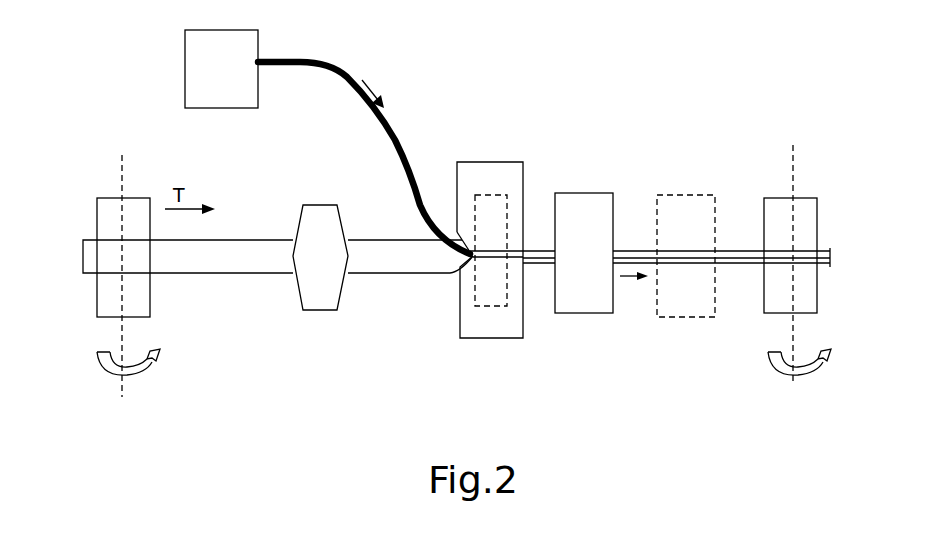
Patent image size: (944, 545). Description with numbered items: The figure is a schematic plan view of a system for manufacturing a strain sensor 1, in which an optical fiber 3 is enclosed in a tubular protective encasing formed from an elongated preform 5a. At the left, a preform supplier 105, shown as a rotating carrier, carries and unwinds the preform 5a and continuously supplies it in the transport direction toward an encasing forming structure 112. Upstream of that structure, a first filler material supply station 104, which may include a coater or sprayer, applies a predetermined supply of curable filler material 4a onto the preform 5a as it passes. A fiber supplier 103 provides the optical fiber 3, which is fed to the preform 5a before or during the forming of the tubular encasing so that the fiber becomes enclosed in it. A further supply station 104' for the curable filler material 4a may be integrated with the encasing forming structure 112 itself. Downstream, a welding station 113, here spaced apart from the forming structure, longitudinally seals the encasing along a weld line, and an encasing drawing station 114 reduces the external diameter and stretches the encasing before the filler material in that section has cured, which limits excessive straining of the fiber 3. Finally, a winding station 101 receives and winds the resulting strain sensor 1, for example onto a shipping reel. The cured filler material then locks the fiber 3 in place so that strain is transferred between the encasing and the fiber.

The strain sensor 1 is at (745, 267).
The optical fiber 3 is at (364, 145).
The curable filler material 4a is at (402, 243).
The preform 5a is at (203, 267).
The winding station 101 is at (818, 303).
The fiber supplier 103 is at (239, 77).
The filler material supply station 104 is at (337, 283).
The filler material supply station 104' is at (507, 202).
The preform supplier 105 is at (106, 208).
The encasing forming structure 112 is at (512, 330).
The welding station 113 is at (607, 193).
The encasing drawing station 114 is at (698, 195).